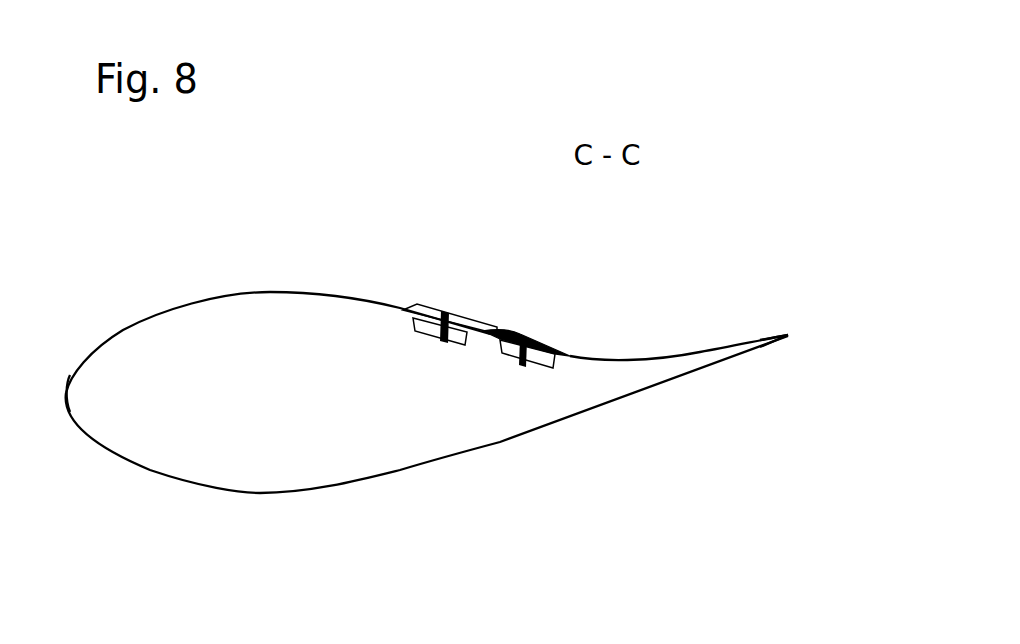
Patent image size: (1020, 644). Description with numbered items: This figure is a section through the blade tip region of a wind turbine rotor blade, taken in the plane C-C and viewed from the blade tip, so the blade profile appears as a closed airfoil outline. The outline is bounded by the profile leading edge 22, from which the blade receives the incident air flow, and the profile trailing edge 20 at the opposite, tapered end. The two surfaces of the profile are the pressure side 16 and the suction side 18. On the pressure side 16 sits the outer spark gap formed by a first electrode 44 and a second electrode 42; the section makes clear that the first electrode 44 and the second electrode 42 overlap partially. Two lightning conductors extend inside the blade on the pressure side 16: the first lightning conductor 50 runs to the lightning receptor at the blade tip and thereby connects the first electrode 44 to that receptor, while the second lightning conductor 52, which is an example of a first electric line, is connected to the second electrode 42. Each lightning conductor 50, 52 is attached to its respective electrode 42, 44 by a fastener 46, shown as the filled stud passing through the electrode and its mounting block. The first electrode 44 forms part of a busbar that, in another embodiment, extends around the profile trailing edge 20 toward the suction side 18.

The pressure side 16 is at (270, 292).
The suction side 18 is at (210, 490).
The profile trailing edge 20 is at (787, 342).
The profile leading edge 22 is at (79, 360).
The second electrode 42 is at (468, 320).
The first electrode 44 is at (548, 336).
The fastener 46 is at (447, 313).
The first lightning conductor 50 is at (507, 348).
The second lightning conductor 52 is at (422, 325).